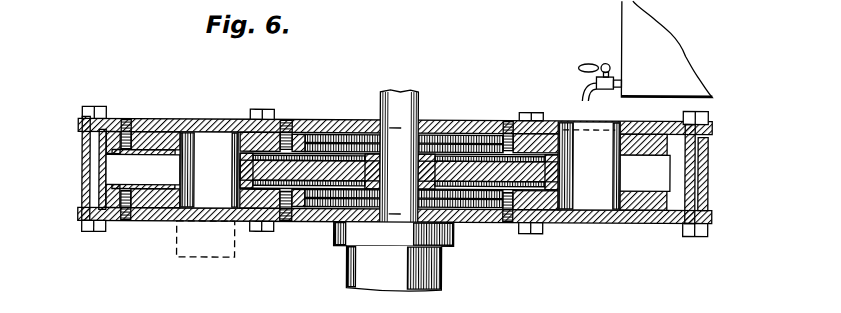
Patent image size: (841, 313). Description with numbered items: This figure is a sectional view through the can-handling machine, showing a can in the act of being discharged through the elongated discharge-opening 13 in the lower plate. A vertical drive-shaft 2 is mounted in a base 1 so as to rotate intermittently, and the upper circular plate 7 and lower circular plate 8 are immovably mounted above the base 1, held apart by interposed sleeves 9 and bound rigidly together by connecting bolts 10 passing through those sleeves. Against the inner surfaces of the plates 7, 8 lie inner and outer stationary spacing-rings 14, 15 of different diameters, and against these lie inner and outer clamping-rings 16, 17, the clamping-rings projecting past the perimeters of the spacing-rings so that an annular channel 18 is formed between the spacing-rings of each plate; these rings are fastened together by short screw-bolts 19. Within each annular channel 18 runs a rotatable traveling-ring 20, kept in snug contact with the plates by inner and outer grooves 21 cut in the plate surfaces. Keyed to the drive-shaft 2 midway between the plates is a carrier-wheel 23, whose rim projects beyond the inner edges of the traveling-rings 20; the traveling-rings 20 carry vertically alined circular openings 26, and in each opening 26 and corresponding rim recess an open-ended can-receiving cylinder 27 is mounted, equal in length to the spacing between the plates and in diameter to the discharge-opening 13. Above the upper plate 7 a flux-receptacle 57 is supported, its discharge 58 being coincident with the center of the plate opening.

The base 1 is at (440, 278).
The vertical drive-shaft 2 is at (406, 116).
The upper circular plate 7 is at (479, 122).
The lower circular plate 8 is at (582, 223).
The sleeve 9 is at (708, 178).
The connecting bolt 10 is at (700, 153).
The discharge-opening 13 is at (218, 222).
The inner stationary spacing-ring 14 is at (308, 132).
The outer stationary spacing-ring 15 is at (116, 130).
The inner clamping-ring 16 is at (265, 152).
The outer clamping-ring 17 is at (645, 182).
The annular channel 18 is at (144, 128).
The short screw-bolt 19 is at (508, 127).
The rotatable traveling-ring 20 is at (171, 128).
The groove 21 is at (158, 130).
The carrier-wheel 23 is at (483, 172).
The circular opening 26 is at (253, 128).
The can-receiving cylinder 27 is at (400, 165).
The flux-receptacle 57 is at (682, 62).
The discharge 58 is at (599, 61).